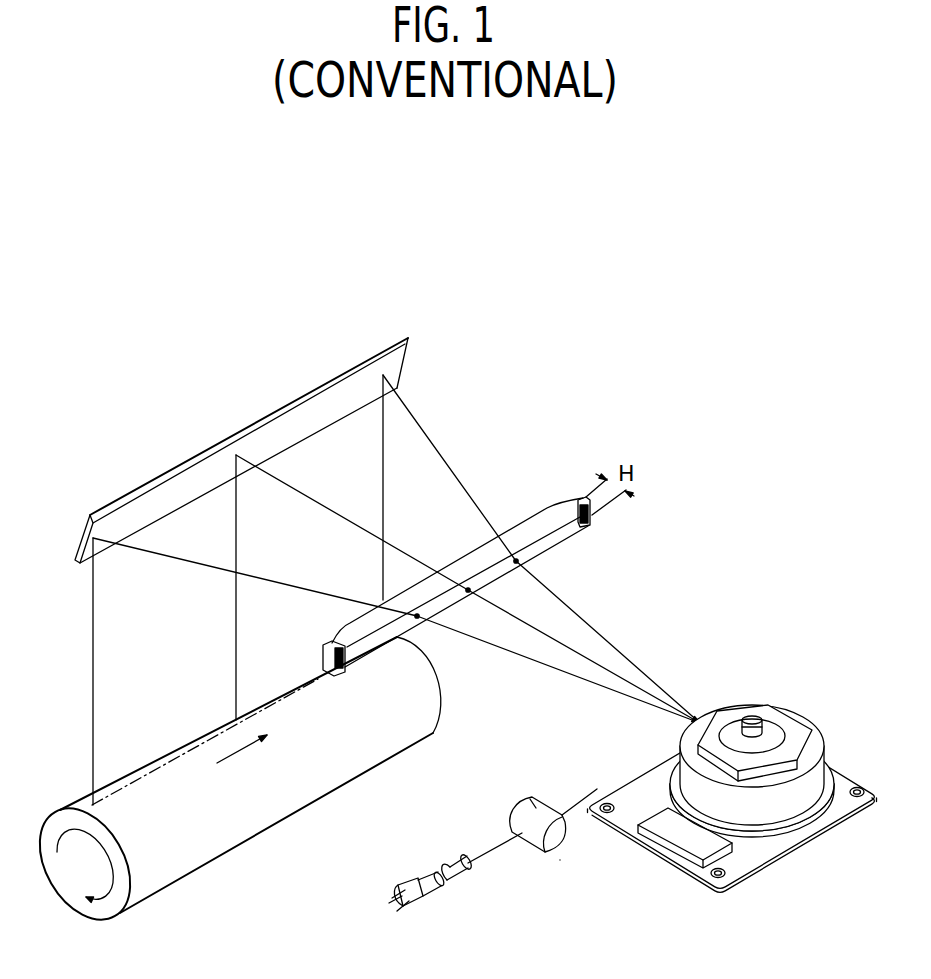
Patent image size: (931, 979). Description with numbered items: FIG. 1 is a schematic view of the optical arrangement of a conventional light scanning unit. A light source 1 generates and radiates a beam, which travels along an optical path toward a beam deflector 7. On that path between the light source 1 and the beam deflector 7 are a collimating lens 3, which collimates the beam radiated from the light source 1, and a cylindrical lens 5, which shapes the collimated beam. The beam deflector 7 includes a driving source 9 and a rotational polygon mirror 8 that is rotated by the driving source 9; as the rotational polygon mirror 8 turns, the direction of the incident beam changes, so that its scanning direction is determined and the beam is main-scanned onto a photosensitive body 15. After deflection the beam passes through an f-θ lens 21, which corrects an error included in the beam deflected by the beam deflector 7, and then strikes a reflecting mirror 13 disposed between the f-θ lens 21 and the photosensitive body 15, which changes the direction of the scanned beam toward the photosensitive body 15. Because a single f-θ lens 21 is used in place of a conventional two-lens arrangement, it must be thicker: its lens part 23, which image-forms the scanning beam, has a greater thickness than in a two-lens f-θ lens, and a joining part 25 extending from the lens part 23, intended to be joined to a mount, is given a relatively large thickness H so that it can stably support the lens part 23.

The light source 1 is at (435, 892).
The collimating lens 3 is at (465, 870).
The cylindrical lens 5 is at (555, 848).
The beam deflector 7 is at (772, 695).
The rotational polygon mirror 8 is at (795, 727).
The driving source 9 is at (823, 740).
The reflecting mirror 13 is at (300, 396).
The photosensitive body 15 is at (267, 820).
The f-θ lens 21 is at (503, 513).
The lens part 23 is at (533, 555).
The joining part 25 is at (592, 522).